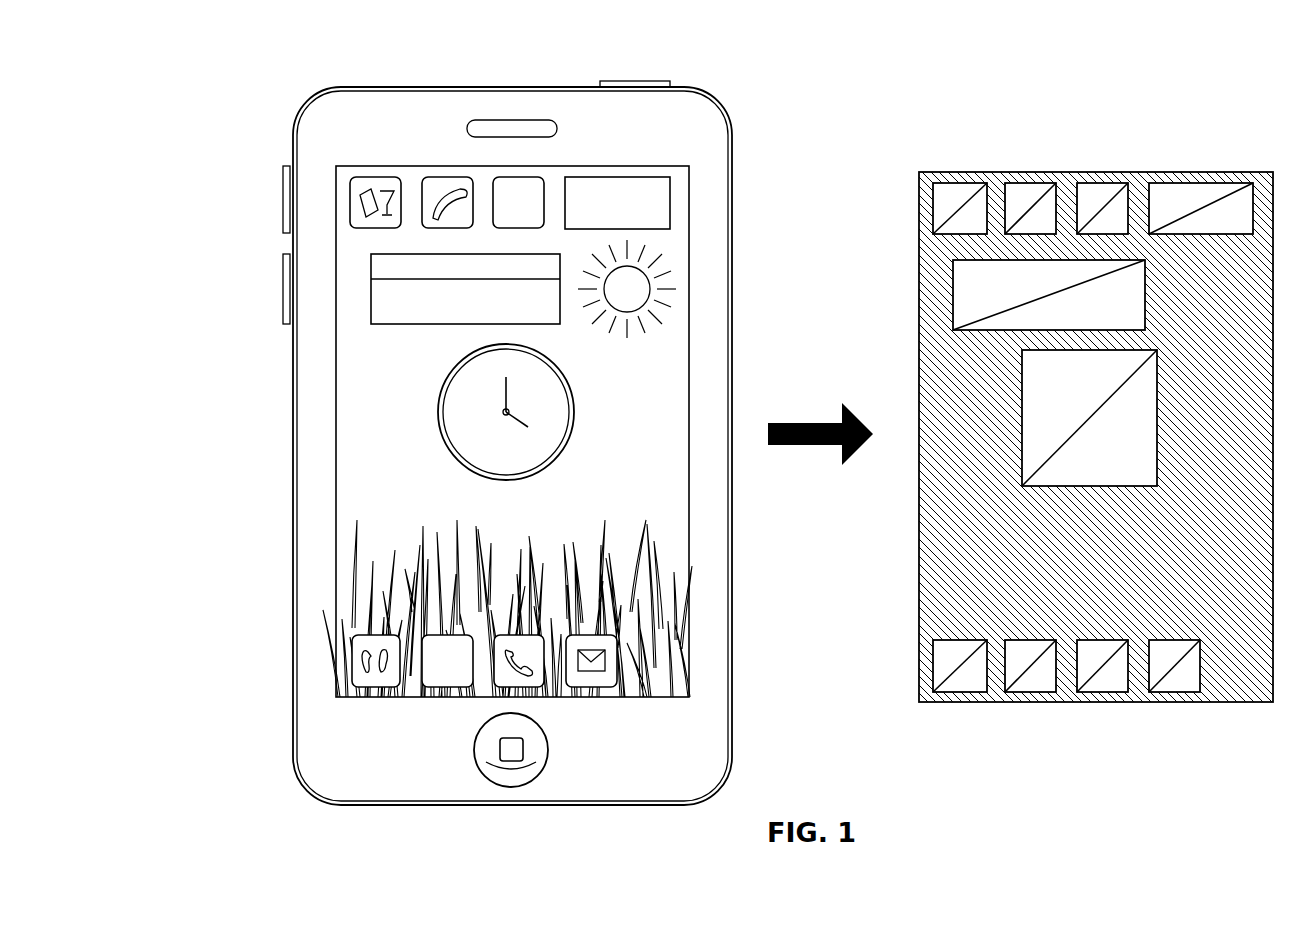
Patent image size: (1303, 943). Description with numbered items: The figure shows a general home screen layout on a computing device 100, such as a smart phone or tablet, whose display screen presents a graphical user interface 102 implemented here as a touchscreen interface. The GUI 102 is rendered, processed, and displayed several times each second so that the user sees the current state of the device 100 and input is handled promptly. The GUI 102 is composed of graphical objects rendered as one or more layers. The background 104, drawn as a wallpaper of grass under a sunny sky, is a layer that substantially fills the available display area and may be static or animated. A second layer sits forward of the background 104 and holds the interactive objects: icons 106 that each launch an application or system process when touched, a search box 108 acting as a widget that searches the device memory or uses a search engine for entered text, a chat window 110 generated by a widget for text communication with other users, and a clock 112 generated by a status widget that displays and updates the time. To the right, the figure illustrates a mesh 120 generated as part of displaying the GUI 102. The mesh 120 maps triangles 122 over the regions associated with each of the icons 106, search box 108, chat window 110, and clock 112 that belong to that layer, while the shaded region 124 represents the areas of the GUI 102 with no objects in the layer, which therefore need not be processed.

The computing device 100 is at (287, 97).
The graphical user interface 102 is at (334, 457).
The background layer 104 is at (641, 444).
The icons 106 is at (330, 222).
The search box 108 is at (672, 195).
The chat window 110 is at (371, 290).
The clock 112 is at (438, 398).
The mesh 120 is at (911, 125).
The triangles 122 is at (892, 203).
The shaded region 124 is at (1208, 546).